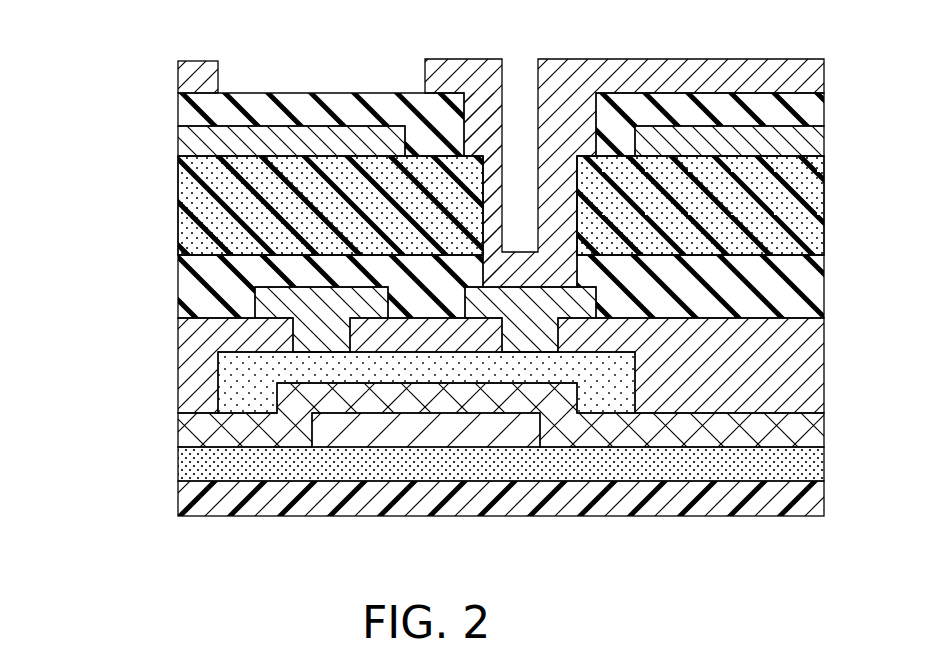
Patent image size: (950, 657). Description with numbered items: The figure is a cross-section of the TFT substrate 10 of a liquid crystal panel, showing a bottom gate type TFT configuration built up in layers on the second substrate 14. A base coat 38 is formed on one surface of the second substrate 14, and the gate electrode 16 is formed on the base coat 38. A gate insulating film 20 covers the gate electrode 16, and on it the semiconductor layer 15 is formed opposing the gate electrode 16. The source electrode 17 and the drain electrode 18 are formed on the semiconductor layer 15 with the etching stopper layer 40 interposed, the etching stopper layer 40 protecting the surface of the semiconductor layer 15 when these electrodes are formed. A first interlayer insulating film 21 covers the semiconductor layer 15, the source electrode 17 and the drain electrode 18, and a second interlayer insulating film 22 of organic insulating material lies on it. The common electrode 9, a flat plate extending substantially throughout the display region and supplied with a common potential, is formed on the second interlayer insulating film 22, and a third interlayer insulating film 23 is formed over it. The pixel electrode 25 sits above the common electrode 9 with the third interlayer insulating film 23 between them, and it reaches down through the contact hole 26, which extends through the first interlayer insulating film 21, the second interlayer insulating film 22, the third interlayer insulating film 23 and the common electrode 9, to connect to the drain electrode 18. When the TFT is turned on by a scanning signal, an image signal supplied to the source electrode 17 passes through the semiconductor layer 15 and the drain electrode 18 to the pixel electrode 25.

The TFT substrate 10 is at (92, 60).
The second substrate 14 is at (258, 517).
The base coat 38 is at (200, 470).
The gate electrode 16 is at (425, 430).
The gate insulating film 20 is at (218, 433).
The semiconductor layer 15 is at (257, 367).
The source electrode 17 is at (260, 305).
The drain electrode 18 is at (518, 313).
The etching stopper layer 40 is at (752, 395).
The first interlayer insulating film 21 is at (207, 272).
The second interlayer insulating film 22 is at (190, 193).
The third interlayer insulating film 23 is at (335, 107).
The pixel electrode 25 is at (650, 85).
The contact hole 26 is at (502, 60).
The common electrode 9 is at (780, 142).